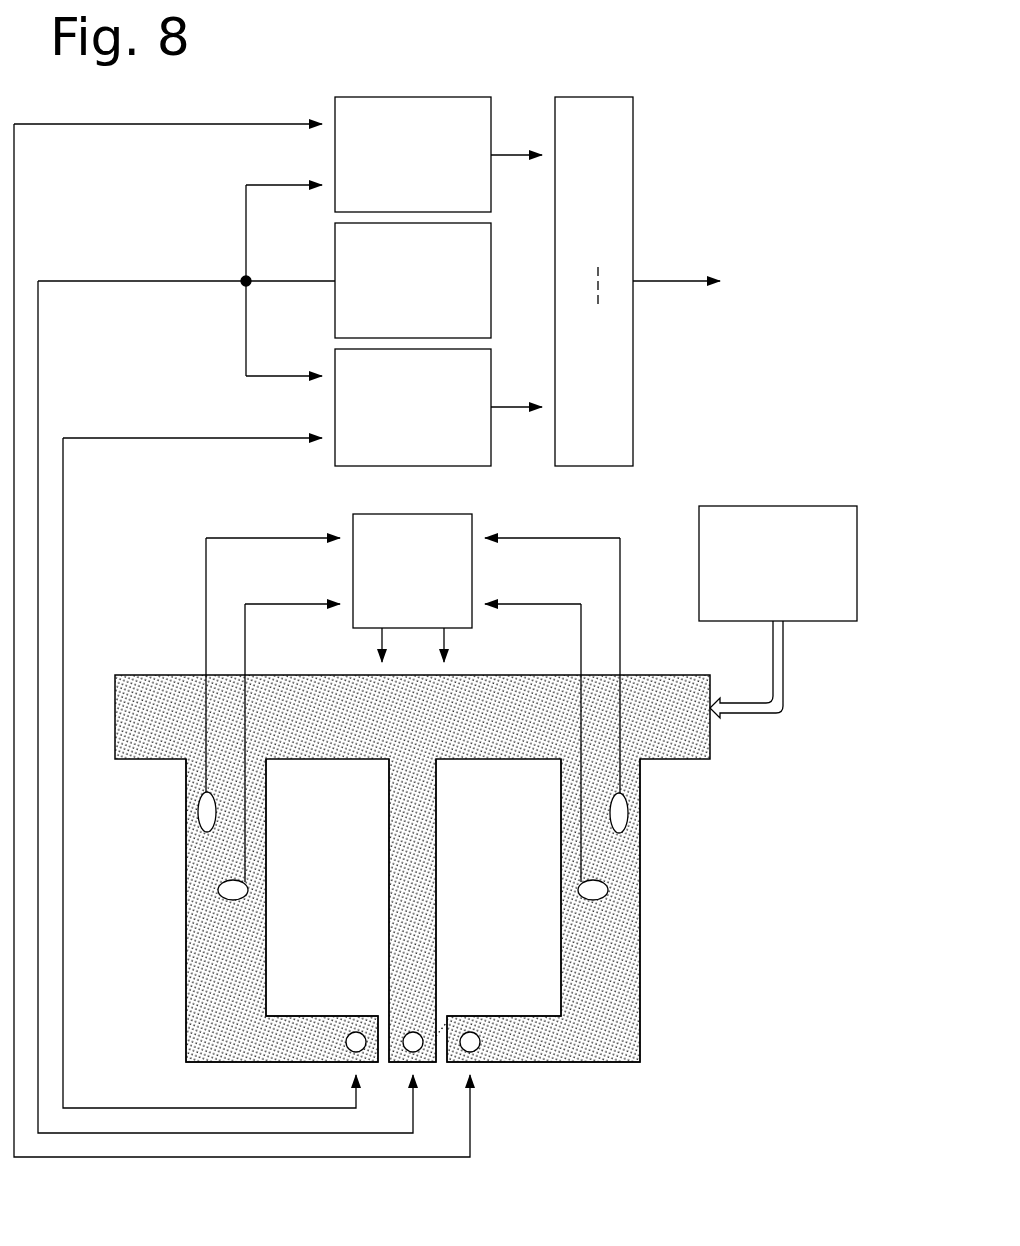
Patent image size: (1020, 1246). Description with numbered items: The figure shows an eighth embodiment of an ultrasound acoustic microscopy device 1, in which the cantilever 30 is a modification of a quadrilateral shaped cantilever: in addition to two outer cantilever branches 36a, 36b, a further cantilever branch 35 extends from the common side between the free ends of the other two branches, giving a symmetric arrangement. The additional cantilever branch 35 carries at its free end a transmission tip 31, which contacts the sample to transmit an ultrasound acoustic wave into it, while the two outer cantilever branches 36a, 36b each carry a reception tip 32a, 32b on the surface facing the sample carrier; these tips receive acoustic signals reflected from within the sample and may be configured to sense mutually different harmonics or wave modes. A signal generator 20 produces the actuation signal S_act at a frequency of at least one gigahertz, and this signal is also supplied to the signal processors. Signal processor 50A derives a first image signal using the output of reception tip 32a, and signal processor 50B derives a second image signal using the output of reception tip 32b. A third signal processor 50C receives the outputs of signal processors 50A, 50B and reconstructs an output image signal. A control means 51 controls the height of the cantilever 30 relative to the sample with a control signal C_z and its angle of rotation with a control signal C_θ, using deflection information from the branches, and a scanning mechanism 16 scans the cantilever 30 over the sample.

The ultrasound acoustic microscopy device 1 is at (686, 1006).
The scanning mechanism 16 is at (766, 608).
The signal generator 20 is at (401, 321).
The cantilever 30 is at (425, 718).
The transmission tip 31 is at (416, 1044).
The reception tip 32a is at (352, 1040).
The reception tip 32b is at (478, 1040).
The further cantilever branch 35 is at (400, 945).
The cantilever branch 36a is at (210, 937).
The cantilever branch 36b is at (576, 945).
The signal processor 50A is at (395, 448).
The signal processor 50B is at (395, 196).
The third signal processor 50C is at (576, 261).
The control means 51 is at (457, 612).